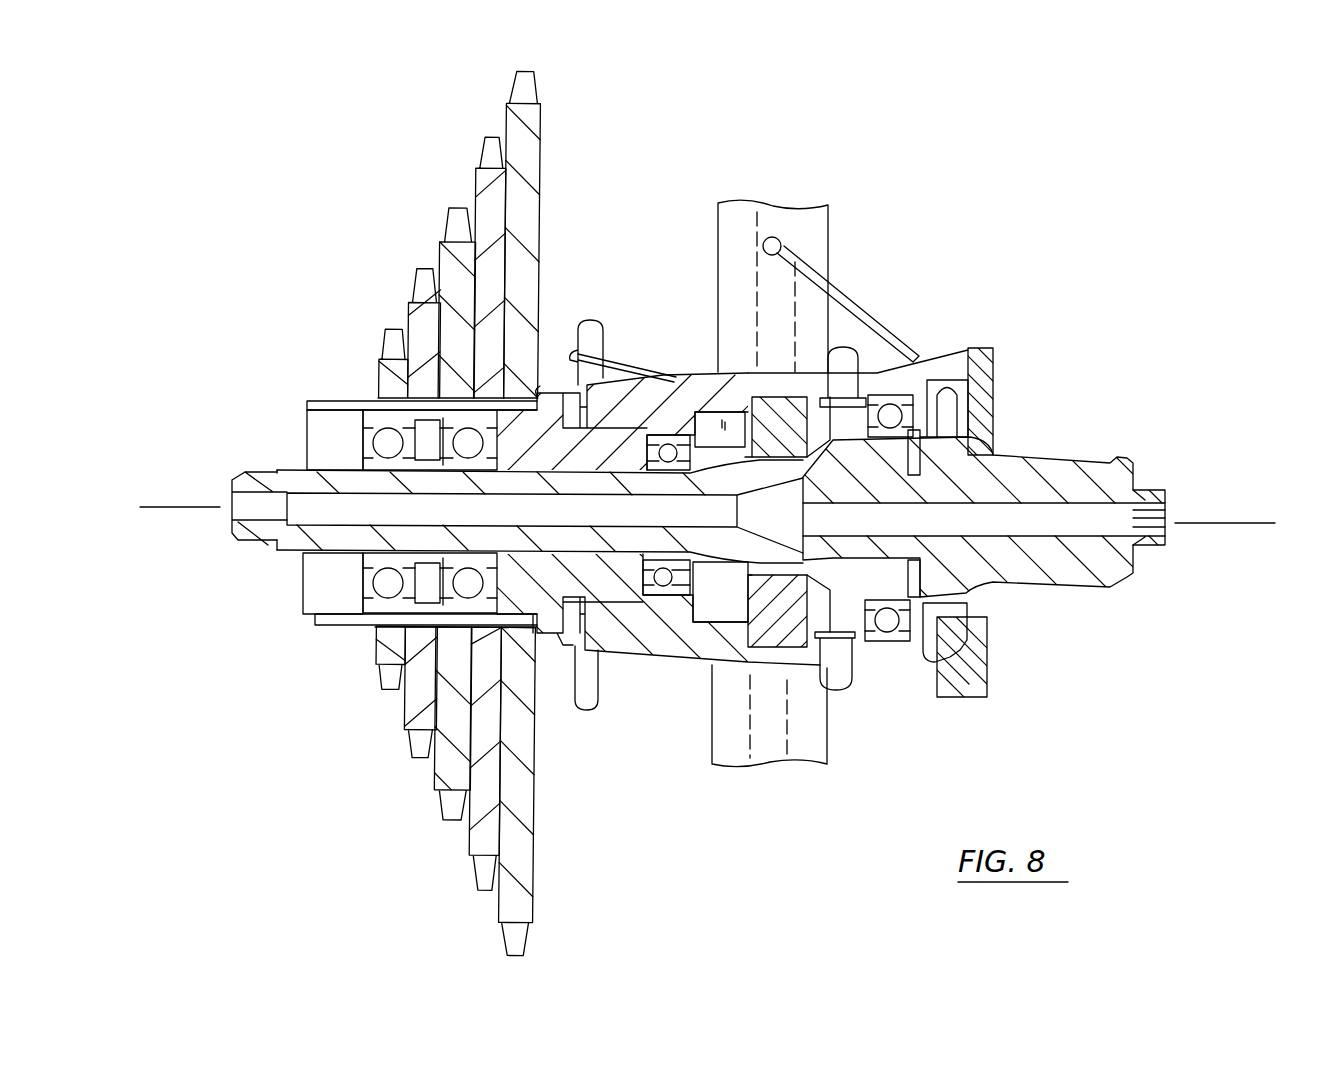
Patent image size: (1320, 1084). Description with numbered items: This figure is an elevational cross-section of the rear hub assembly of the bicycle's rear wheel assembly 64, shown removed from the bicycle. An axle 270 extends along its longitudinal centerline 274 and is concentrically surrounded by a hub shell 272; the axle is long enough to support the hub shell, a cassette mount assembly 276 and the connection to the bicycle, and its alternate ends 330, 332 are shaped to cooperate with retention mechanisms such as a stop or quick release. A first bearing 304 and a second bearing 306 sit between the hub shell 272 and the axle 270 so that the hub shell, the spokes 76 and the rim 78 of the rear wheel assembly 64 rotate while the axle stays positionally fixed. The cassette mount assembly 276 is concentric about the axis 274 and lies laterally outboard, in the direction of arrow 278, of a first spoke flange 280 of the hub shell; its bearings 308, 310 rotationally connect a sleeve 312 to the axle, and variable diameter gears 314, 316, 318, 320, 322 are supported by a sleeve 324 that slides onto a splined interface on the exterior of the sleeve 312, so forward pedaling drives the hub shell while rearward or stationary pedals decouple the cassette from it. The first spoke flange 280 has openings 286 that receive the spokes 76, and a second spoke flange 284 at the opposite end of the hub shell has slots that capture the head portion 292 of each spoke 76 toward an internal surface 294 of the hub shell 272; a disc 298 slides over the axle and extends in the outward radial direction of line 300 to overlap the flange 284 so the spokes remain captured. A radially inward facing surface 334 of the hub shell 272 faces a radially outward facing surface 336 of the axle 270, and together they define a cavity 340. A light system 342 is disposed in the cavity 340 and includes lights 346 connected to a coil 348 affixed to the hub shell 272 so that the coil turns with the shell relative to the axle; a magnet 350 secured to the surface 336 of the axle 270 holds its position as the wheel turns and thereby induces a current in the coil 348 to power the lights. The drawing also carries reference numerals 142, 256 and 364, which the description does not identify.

The rear wheel assembly 64 is at (975, 145).
The spokes 76 is at (800, 262).
The rim 78 is at (806, 212).
The transmission 142 is at (972, 218).
The hub 256 is at (716, 413).
The axle 270 is at (240, 546).
The hub shell 272 is at (717, 612).
The longitudinal centerline 274 is at (163, 505).
The cassette mount assembly 276 is at (325, 630).
The arrow 278 is at (400, 78).
The first spoke flange 280 is at (590, 325).
The second spoke flange 284 is at (953, 685).
The openings 286 is at (592, 353).
The head portion 292 is at (937, 383).
The internal surface 294 is at (920, 395).
The disc 298 is at (990, 358).
The line 300 is at (1237, 458).
The first bearing 304 is at (668, 598).
The second bearing 306 is at (900, 642).
The bearing 308 is at (383, 600).
The bearing 310 is at (465, 603).
The sleeve 312 is at (307, 407).
The variable diameter gear 314 is at (382, 367).
The variable diameter gear 316 is at (410, 315).
The variable diameter gear 318 is at (445, 255).
The variable diameter gear 320 is at (482, 180).
The variable diameter gear 322 is at (541, 118).
The sleeve 324 is at (330, 397).
The axle end 330 is at (220, 470).
The axle end 332 is at (1236, 420).
The radially inward facing surface 334 is at (717, 615).
The radially outward facing surface 336 is at (727, 560).
The cavity 340 is at (737, 598).
The light system 342 is at (810, 690).
The lights 346 is at (840, 690).
The coil 348 is at (787, 412).
The magnet 350 is at (823, 503).
The cup 364 is at (850, 337).